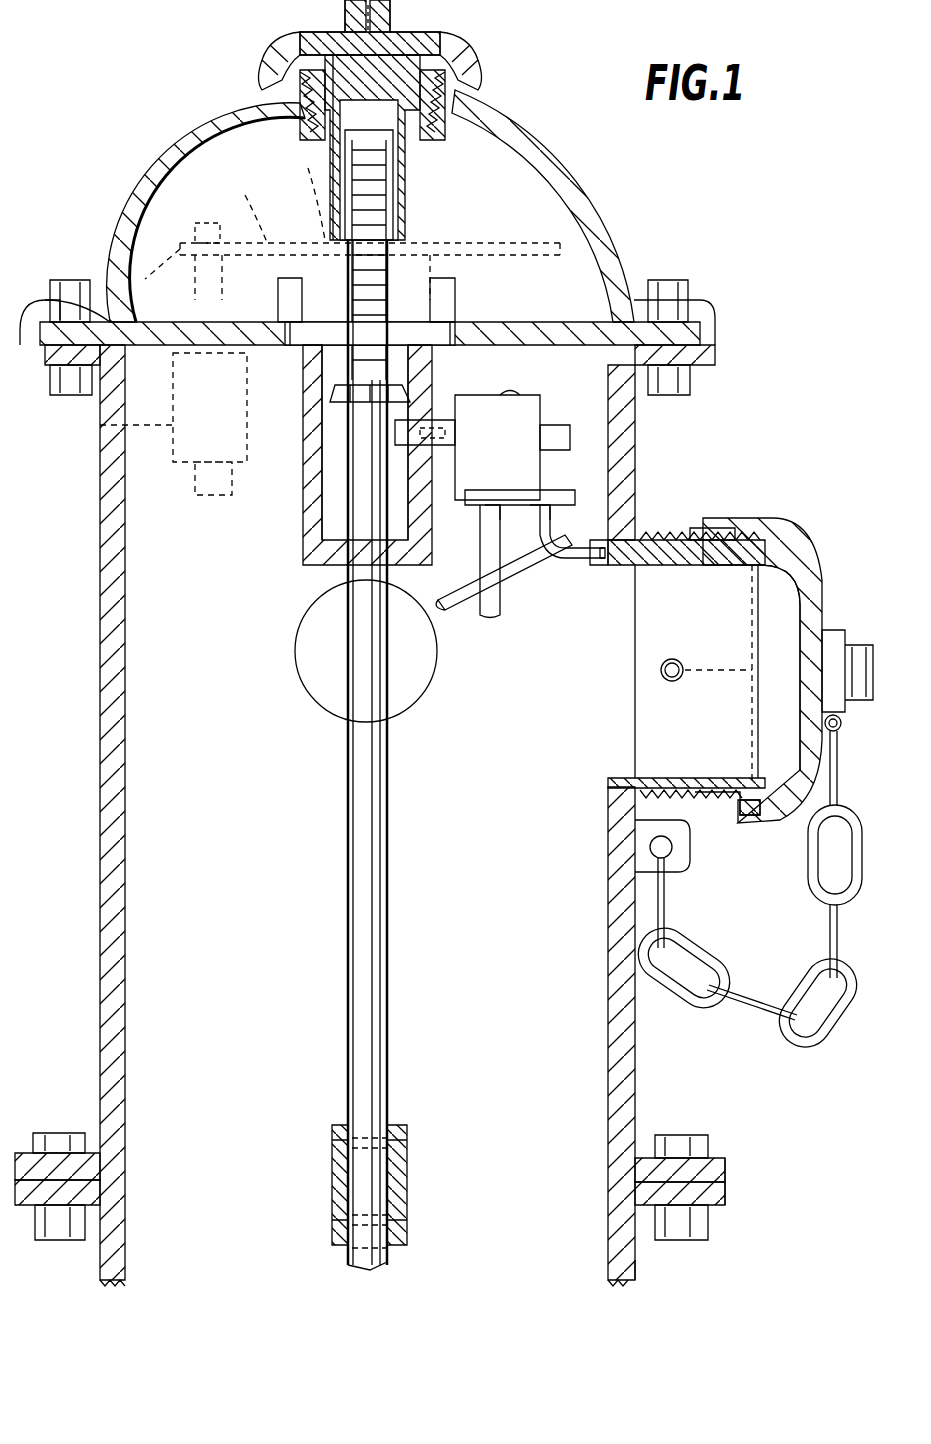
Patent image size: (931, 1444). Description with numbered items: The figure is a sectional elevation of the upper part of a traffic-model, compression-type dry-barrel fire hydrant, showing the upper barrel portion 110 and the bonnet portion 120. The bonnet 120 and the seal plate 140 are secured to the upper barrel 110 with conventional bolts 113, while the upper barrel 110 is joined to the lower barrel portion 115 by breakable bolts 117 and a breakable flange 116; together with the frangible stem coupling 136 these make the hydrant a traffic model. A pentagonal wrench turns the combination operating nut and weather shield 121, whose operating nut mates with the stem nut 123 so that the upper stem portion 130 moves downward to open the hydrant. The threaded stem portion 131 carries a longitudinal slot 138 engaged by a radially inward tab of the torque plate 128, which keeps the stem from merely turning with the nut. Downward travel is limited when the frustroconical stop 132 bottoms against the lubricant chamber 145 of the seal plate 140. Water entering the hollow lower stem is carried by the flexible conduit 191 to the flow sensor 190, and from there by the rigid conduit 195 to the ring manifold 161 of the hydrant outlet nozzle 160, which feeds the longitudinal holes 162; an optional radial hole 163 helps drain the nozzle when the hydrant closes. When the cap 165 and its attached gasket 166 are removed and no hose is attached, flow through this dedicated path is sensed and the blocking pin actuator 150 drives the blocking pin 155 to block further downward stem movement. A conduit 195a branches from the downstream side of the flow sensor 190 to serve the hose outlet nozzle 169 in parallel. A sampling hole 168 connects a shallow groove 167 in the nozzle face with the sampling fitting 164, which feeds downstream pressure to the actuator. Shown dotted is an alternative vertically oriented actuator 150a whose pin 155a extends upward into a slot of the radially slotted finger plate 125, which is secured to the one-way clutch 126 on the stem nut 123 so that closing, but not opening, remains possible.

The upper barrel portion 110 is at (100, 665).
The conventional bolts 113 is at (672, 290).
The lower barrel portion 115 is at (640, 1262).
The breakable flange 116 is at (725, 1180).
The breakable bolts 117 is at (680, 1130).
The bonnet portion 120 is at (595, 230).
The combination operating nut and weather shield 121 is at (465, 72).
The stem nut 123 is at (400, 185).
The radially slotted finger plate 125 is at (231, 208).
The one-way clutch 126 is at (358, 155).
The torque plate 128 is at (465, 318).
The upper stem portion 130 is at (385, 960).
The threaded stem portion 131 is at (395, 165).
The stop 132 is at (405, 392).
The frangible stem coupling 136 is at (408, 1190).
The longitudinal slot 138 is at (395, 225).
The seal plate 140 is at (585, 322).
The lubricant chamber 145 is at (330, 498).
The blocking pin actuator 150 is at (528, 395).
The vertically oriented actuator 150a is at (90, 430).
The blocking pin 155 is at (440, 420).
The pin 155a is at (135, 222).
The hydrant outlet nozzle 160 is at (630, 700).
The ring manifold 161 is at (650, 540).
The longitudinal holes 162 is at (700, 540).
The radial hole 163 is at (730, 820).
The sampling fitting 164 is at (660, 670).
The cap 165 is at (760, 545).
The gasket 166 is at (780, 600).
The shallow groove 167 is at (745, 585).
The sampling hole 168 is at (705, 680).
The hose outlet nozzle 169 is at (312, 716).
The flow sensor 190 is at (590, 510).
The flexible conduit 191 is at (500, 595).
The rigid conduit 195 is at (580, 500).
The conduit 195a is at (530, 560).